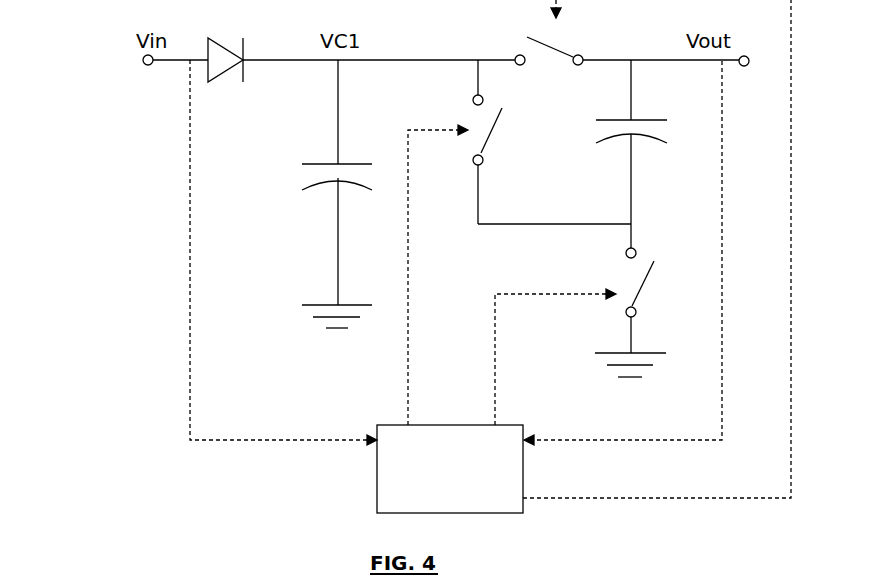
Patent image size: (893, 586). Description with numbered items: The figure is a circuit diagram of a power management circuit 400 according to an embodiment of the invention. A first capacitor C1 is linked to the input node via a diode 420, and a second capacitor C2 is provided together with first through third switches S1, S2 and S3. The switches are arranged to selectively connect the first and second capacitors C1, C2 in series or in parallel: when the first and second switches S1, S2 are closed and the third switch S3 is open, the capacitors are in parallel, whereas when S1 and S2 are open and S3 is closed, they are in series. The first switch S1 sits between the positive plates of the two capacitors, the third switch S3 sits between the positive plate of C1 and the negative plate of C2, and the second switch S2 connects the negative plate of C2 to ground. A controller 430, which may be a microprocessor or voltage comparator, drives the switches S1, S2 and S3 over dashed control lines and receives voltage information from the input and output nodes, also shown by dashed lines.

The power management circuit 400 is at (128, 161).
The diode 420 is at (241, 78).
The controller 430 is at (490, 256).
The first capacitor C1 is at (310, 194).
The second capacitor C2 is at (644, 154).
The first switch S1 is at (565, 32).
The second switch S2 is at (651, 312).
The third switch S3 is at (552, 142).